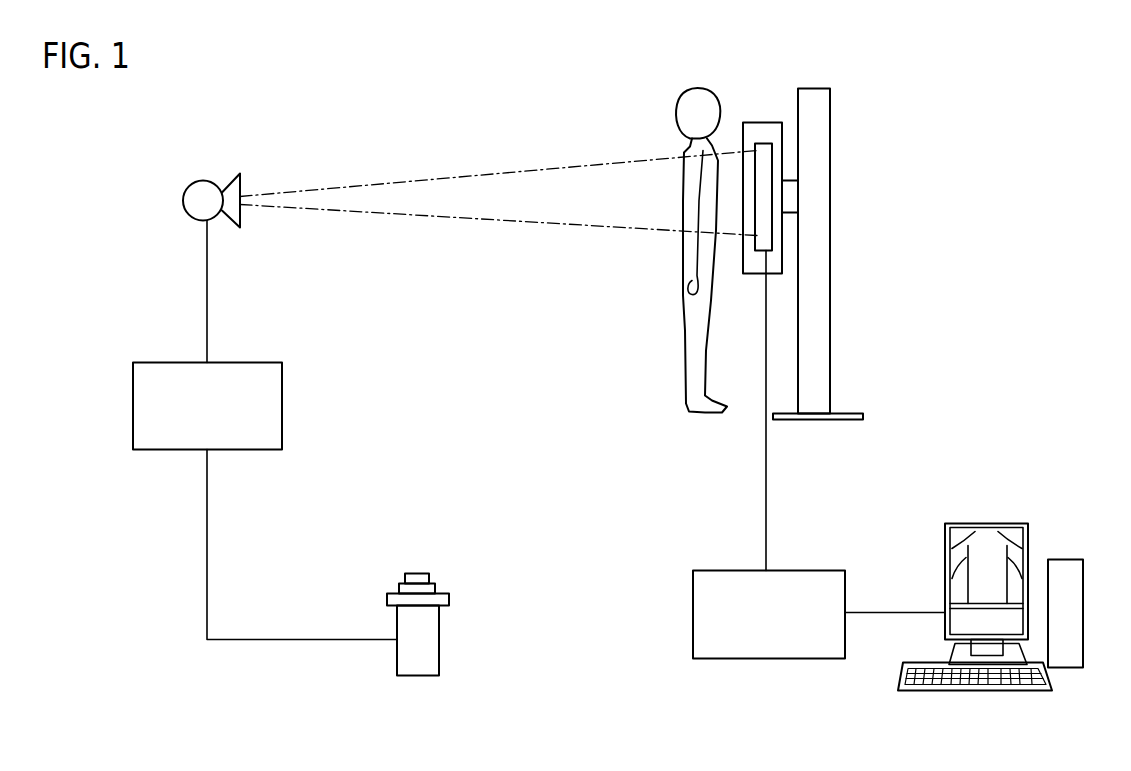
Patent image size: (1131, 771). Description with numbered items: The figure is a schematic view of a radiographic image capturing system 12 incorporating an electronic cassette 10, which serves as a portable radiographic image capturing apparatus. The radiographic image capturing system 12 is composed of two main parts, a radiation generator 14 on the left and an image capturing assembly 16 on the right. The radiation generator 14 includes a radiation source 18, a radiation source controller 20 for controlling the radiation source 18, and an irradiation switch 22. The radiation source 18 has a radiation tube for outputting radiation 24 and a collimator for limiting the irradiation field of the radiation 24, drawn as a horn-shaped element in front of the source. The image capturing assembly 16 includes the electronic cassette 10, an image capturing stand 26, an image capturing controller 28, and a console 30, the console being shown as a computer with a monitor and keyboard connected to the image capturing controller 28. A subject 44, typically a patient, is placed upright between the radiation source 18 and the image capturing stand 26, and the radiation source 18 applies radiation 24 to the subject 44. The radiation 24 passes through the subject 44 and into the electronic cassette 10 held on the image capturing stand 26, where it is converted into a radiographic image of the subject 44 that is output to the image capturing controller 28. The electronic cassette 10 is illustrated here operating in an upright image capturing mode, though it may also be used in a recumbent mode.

The electronic cassette 10 is at (758, 143).
The radiographic image capturing system 12 is at (436, 109).
The radiation generator 14 is at (185, 174).
The image capturing assembly 16 is at (824, 236).
The radiation source 18 is at (198, 203).
The radiation source controller 20 is at (158, 362).
The irradiation switch 22 is at (439, 643).
The radiation 24 is at (468, 218).
The image capturing stand 26 is at (818, 178).
The image capturing controller 28 is at (725, 570).
The console 30 is at (965, 692).
The subject 44 is at (686, 335).